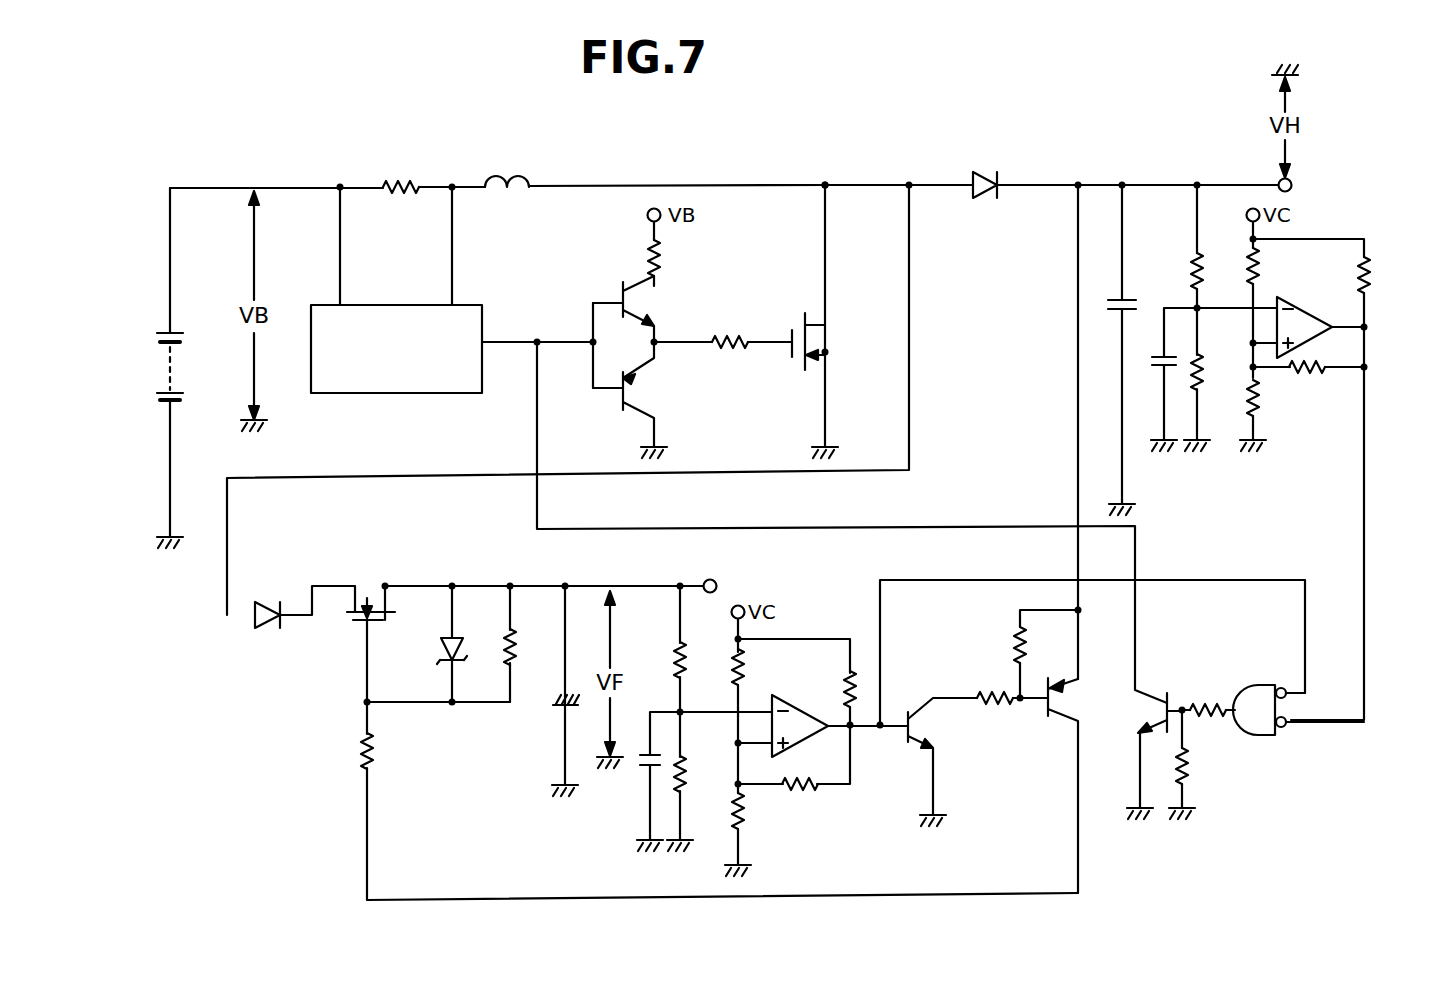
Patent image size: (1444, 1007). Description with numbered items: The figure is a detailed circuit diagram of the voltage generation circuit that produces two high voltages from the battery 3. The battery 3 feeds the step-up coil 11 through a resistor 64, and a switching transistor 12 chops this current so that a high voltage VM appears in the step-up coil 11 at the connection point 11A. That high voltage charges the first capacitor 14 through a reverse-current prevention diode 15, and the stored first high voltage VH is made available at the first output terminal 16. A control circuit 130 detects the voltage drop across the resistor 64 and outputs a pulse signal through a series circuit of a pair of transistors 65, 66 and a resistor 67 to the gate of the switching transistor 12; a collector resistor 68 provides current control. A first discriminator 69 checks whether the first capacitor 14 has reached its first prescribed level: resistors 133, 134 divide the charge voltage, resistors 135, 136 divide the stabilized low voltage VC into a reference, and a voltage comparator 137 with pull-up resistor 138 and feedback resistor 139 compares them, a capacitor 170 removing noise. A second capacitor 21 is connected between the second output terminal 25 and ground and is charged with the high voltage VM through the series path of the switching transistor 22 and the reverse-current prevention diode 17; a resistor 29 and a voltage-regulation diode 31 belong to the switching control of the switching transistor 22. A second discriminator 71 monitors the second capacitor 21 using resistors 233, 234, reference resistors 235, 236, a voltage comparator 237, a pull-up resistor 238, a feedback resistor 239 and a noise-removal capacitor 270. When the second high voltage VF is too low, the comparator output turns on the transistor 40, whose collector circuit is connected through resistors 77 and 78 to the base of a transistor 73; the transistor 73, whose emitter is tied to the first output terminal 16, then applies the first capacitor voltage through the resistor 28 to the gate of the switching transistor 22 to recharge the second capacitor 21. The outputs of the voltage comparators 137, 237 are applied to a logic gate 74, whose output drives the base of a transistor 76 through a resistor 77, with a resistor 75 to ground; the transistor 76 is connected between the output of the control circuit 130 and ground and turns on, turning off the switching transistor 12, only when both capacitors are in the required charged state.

The battery 3 is at (174, 364).
The resistor 64 is at (400, 179).
The step-up coil 11 is at (509, 174).
The junction node 11A is at (825, 181).
The reverse-current prevention diode 15 is at (984, 195).
The first output terminal 16 is at (1292, 187).
The first discriminator 69 is at (1358, 218).
The first capacitor 14 is at (1118, 300).
The resistor 133 is at (1192, 274).
The resistor 134 is at (1205, 363).
The resistor 135 is at (1259, 262).
The resistor 136 is at (1259, 400).
The voltage comparator 137 is at (1318, 324).
The pull-up resistor 138 is at (1370, 275).
The feedback resistor 139 is at (1310, 374).
The capacitor 170 is at (1166, 360).
The control circuit 130 is at (391, 393).
The collector resistor 68 is at (661, 256).
The transistor 65 is at (630, 300).
The transistor 66 is at (630, 392).
The resistor 67 is at (728, 349).
The switching transistor 12 is at (790, 328).
The reverse-current prevention diode 17 is at (266, 596).
The switching transistor 22 is at (368, 596).
The second output terminal 25 is at (711, 567).
The resistor 29 is at (502, 642).
The voltage-regulation diode 31 is at (440, 656).
The resistor 28 is at (360, 750).
The second capacitor 21 is at (562, 696).
The resistor 233 is at (678, 654).
The resistor 234 is at (688, 764).
The capacitor 270 is at (640, 766).
The resistor 235 is at (744, 659).
The resistor 236 is at (744, 806).
The voltage comparator 237 is at (802, 735).
The pull-up resistor 238 is at (844, 692).
The feedback resistor 239 is at (805, 791).
The second discriminator 71 is at (830, 838).
The transistor 40 is at (916, 722).
The resistor 77 is at (986, 695).
The resistor 78 is at (1013, 638).
The transistor 73 is at (1058, 700).
The transistor 76 is at (1162, 696).
The logic gate 74 is at (1262, 684).
The resistor 75 is at (1190, 768).